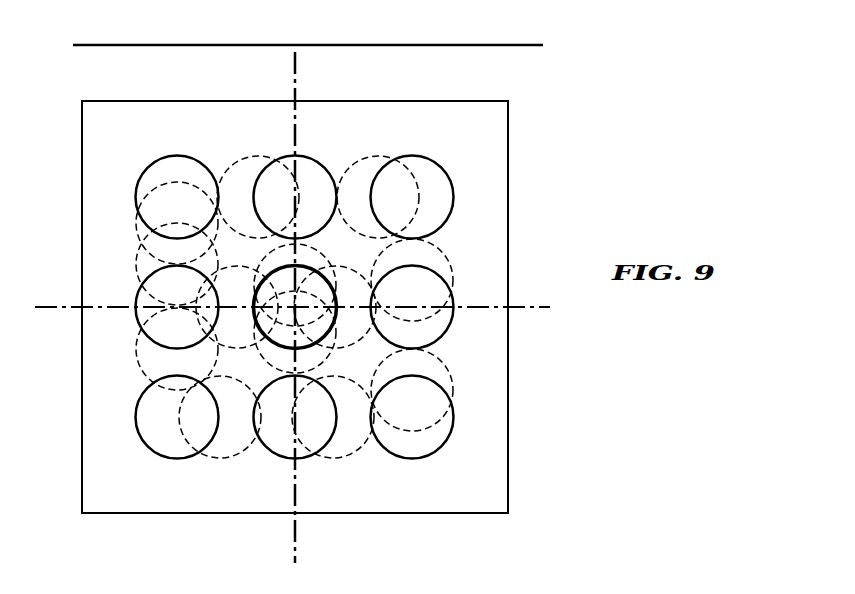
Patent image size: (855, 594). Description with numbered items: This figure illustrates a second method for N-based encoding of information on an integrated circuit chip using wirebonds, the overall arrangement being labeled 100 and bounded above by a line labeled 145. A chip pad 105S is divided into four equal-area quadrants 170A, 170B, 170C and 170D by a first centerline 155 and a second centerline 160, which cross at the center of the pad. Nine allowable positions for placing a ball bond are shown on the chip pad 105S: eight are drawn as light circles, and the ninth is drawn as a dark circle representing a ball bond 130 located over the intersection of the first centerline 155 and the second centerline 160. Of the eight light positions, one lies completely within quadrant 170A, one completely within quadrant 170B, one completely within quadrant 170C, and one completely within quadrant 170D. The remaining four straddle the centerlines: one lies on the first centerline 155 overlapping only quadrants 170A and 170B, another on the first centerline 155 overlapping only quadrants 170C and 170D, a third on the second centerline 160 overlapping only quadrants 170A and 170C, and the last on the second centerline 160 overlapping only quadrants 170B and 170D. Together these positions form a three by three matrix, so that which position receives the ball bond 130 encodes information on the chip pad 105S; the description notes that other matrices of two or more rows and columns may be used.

The device 100 is at (532, 82).
The chip pad 105S is at (509, 438).
The ball bond 130 is at (307, 289).
The reference line 145 is at (123, 45).
The first centerline 155 is at (295, 548).
The second centerline 160 is at (535, 305).
The quadrant 170A is at (132, 136).
The quadrant 170B is at (496, 136).
The quadrant 170C is at (132, 502).
The quadrant 170D is at (504, 502).